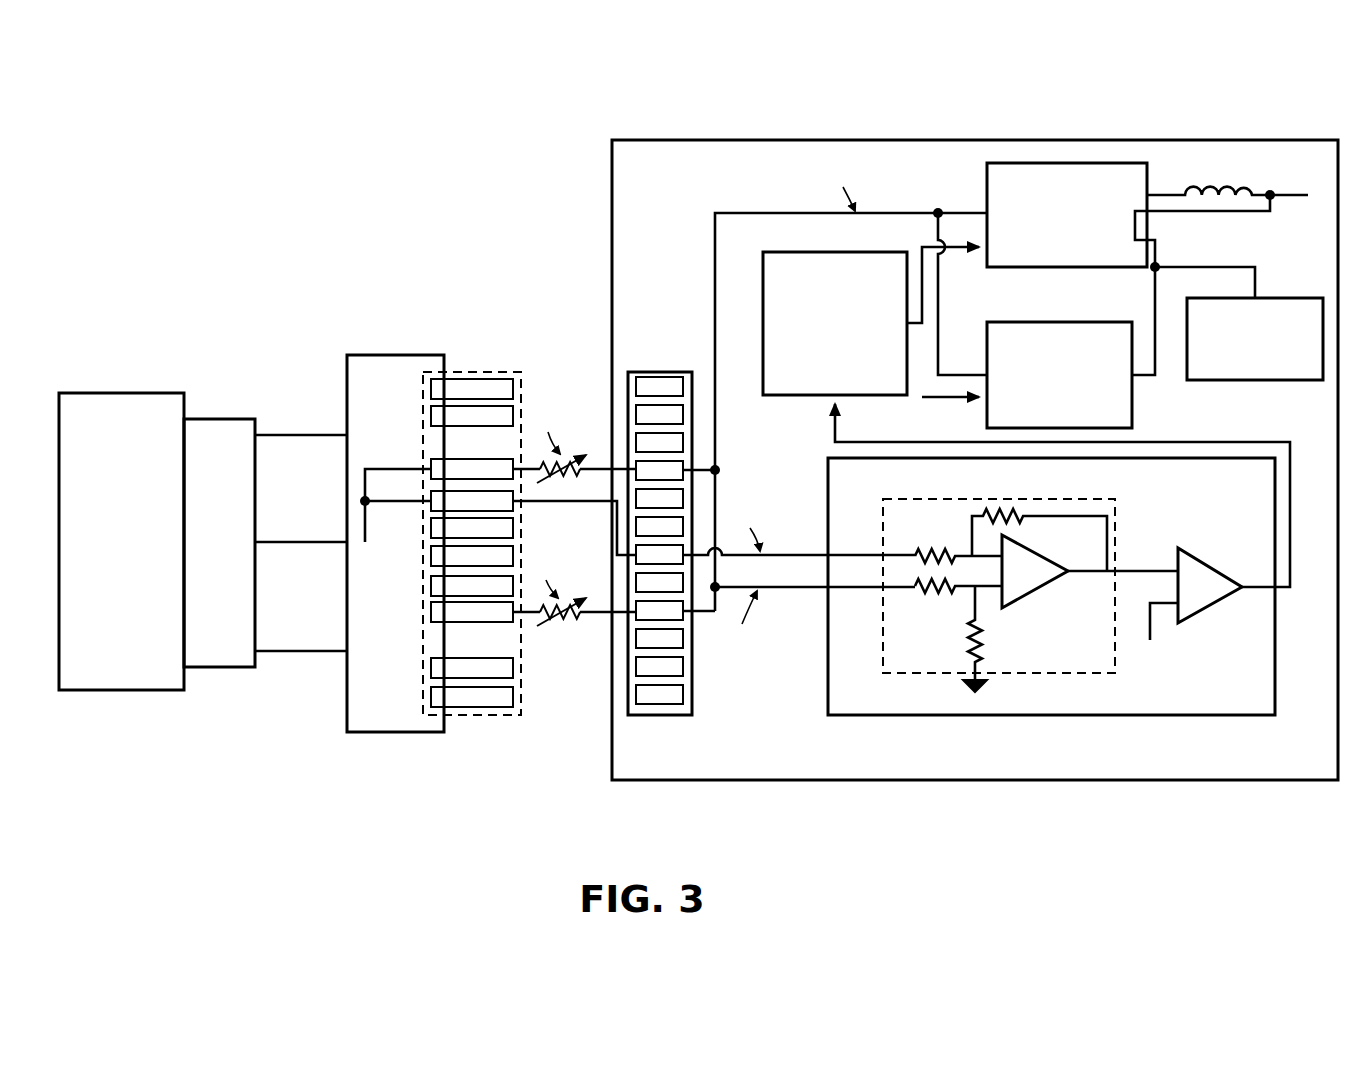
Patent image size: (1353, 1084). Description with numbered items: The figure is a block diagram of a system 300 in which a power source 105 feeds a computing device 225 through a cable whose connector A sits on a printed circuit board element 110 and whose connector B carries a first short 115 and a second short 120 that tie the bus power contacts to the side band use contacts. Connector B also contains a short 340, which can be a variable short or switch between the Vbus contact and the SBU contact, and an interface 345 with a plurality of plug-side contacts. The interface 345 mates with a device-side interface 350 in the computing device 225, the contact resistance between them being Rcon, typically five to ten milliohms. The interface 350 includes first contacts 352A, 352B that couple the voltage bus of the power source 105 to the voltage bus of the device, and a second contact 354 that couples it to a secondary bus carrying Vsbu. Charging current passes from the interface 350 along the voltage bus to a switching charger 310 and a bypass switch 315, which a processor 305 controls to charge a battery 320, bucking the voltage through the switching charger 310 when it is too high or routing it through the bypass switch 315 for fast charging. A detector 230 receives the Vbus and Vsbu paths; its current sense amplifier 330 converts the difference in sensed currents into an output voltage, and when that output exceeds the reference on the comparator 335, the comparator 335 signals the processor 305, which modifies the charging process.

The charging system 300 is at (698, 444).
The power source 105 is at (121, 541).
The printed circuit board bus or path 110 is at (222, 416).
The first short 115 is at (262, 430).
The second short 120 is at (345, 369).
The short 340 is at (403, 504).
The interface 345 is at (482, 370).
The computing device 225 is at (975, 460).
The interface 350 is at (697, 521).
The first contact 352A is at (686, 459).
The second contact 354 is at (686, 544).
The first contact 352B is at (686, 619).
The processor 305 is at (835, 323).
The switching charger 310 is at (1067, 215).
The bypass switch 315 is at (1059, 375).
The battery 320 is at (1255, 339).
The detector 230 is at (1051, 586).
The current sense amplifier 330 is at (1030, 595).
The comparator 335 is at (1192, 556).